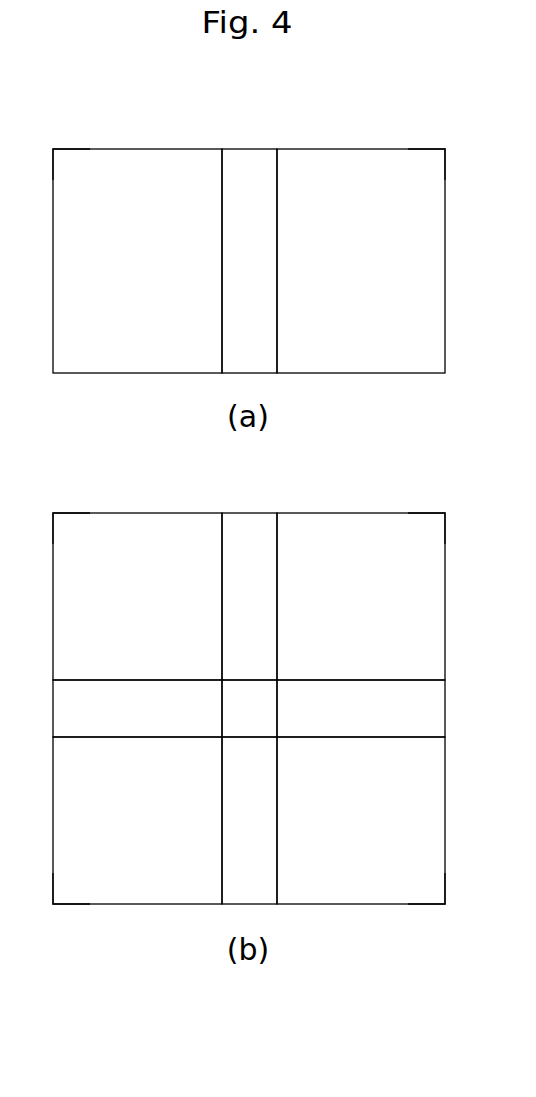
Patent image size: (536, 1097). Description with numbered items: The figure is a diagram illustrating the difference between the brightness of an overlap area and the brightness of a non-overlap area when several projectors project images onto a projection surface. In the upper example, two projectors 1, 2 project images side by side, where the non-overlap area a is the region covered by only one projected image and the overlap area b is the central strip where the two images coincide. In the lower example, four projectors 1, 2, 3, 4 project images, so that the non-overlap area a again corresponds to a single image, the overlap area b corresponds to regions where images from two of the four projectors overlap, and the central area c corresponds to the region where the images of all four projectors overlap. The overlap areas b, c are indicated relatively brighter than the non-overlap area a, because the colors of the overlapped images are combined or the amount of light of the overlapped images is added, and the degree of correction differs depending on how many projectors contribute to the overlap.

The projector 1 is at (71, 333).
The projector 2 is at (426, 333).
The projector 3 is at (71, 902).
The projector 4 is at (426, 902).
The non-overlap area a is at (249, 526).
The overlap area b is at (249, 526).
The four-projector overlap area c is at (249, 708).